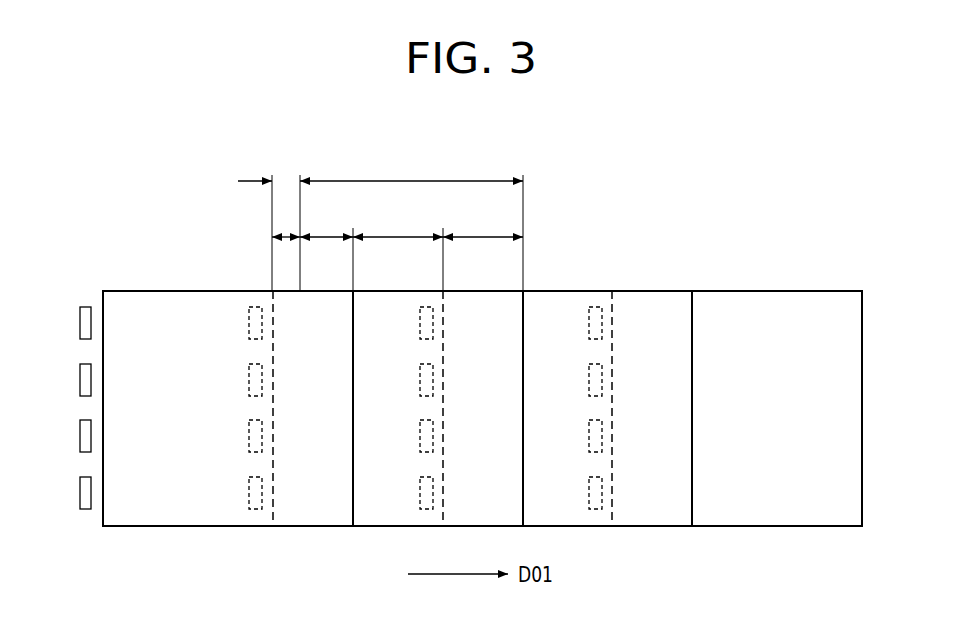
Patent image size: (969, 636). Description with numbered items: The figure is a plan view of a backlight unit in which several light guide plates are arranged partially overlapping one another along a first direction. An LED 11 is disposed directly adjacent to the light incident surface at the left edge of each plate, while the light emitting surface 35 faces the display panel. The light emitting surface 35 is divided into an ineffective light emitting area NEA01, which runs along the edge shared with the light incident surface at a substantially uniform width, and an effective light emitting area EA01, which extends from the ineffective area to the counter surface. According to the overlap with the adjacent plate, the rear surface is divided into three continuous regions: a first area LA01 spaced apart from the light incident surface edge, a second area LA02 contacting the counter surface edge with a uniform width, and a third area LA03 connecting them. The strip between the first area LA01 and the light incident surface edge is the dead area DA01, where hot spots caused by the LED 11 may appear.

The LED 11 is at (80, 322).
The light emitting surface 35 is at (135, 300).
The ineffective light emitting area NEA01 is at (277, 164).
The effective light emitting area EA01 is at (411, 164).
The dead area DA01 is at (287, 236).
The first area LA01 is at (326, 218).
The second area LA02 is at (483, 218).
The third area LA03 is at (398, 218).